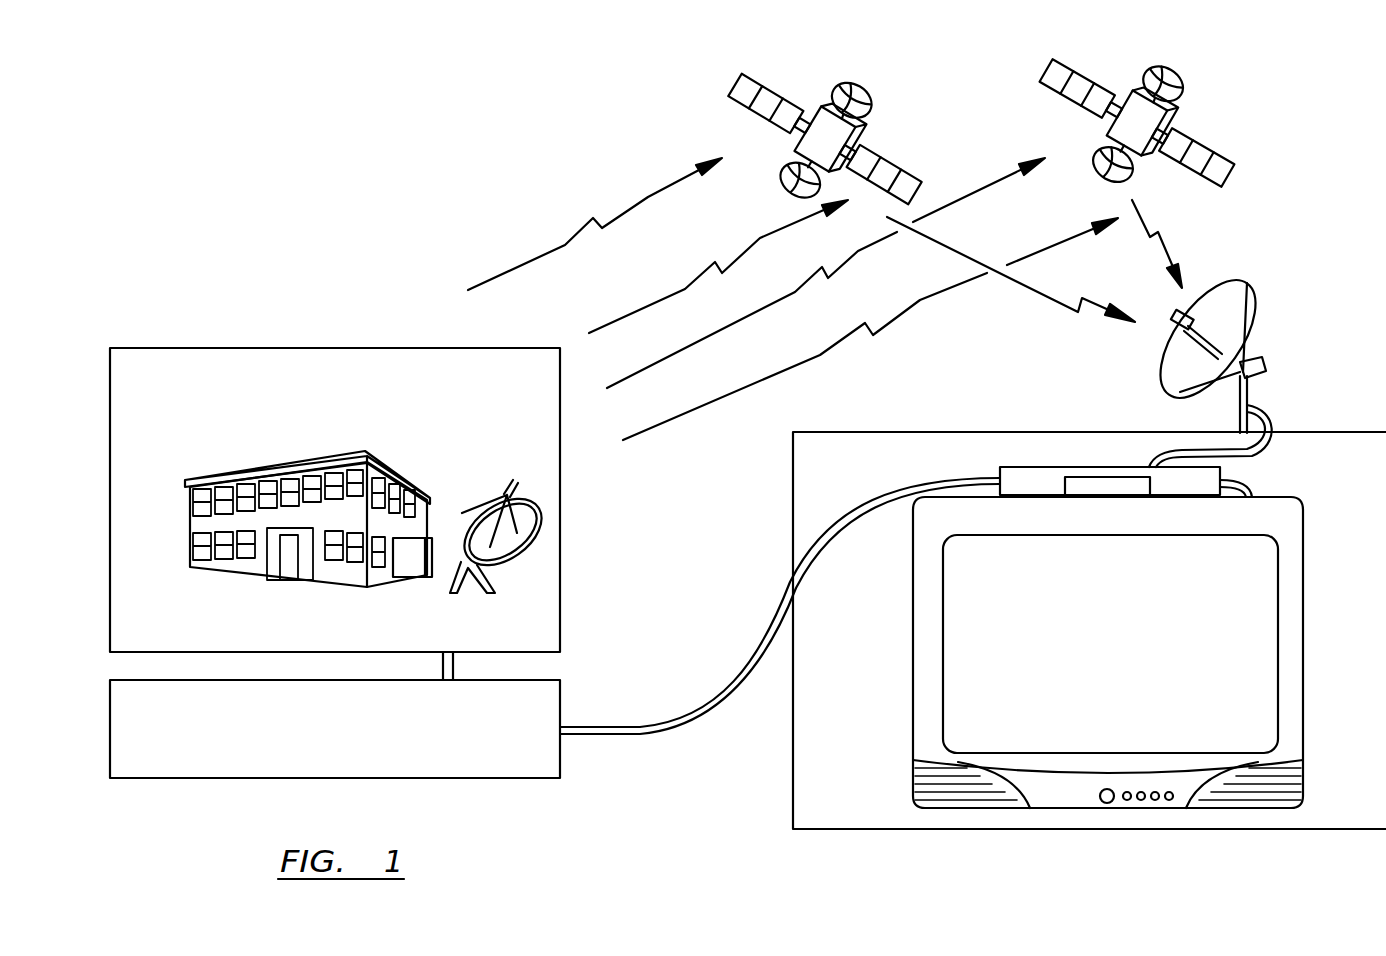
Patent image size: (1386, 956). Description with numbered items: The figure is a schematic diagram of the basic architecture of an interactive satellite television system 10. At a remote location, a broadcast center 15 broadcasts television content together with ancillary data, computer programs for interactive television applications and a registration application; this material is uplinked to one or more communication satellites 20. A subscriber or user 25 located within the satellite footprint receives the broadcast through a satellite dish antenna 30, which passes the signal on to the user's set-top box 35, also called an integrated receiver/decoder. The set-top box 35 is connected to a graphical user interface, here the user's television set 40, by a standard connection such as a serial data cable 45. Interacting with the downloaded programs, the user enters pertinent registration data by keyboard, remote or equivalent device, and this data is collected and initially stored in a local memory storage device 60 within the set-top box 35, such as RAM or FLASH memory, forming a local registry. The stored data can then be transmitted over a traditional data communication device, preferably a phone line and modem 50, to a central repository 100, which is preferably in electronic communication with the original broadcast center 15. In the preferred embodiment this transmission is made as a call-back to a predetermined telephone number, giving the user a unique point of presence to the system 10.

The system 10 is at (415, 180).
The broadcast center 15 is at (255, 348).
The communication satellites 20 is at (918, 172).
The subscriber or user 25 is at (793, 790).
The satellite dish antenna 30 is at (1250, 320).
The set-top box 35 is at (1040, 466).
The television set 40 is at (1120, 661).
The serial data cable 45 is at (1230, 481).
The phone line and modem 50 is at (696, 698).
The local memory storage device 60 is at (1112, 476).
The central repository 100 is at (560, 690).